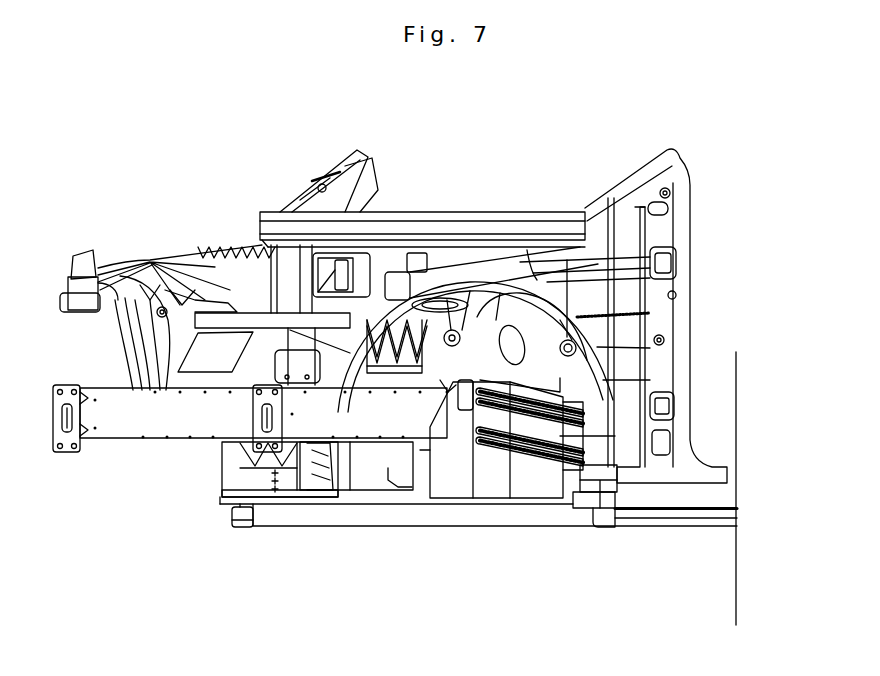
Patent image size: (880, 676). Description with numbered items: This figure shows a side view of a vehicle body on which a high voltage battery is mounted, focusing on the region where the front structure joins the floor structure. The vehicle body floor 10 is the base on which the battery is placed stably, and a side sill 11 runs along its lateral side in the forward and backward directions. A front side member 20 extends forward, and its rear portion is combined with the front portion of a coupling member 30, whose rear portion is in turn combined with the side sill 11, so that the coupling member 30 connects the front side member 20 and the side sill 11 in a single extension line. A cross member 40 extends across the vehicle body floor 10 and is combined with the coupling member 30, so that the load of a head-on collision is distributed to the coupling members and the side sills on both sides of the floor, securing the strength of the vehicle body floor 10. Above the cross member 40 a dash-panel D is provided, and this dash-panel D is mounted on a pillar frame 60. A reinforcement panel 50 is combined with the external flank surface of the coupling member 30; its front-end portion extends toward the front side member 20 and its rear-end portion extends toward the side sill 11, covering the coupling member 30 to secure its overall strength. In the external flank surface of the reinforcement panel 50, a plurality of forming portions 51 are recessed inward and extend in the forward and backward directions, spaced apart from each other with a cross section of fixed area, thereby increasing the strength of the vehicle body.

The vehicle body floor 10 is at (505, 508).
The side sill 11 is at (712, 495).
The front side member 20 is at (343, 420).
The coupling member 30 is at (252, 478).
The cross member 40 is at (378, 462).
The reinforcement panel 50 is at (537, 483).
The forming portion 51 is at (541, 412).
The pillar frame 60 is at (668, 315).
The dash-panel D is at (451, 232).